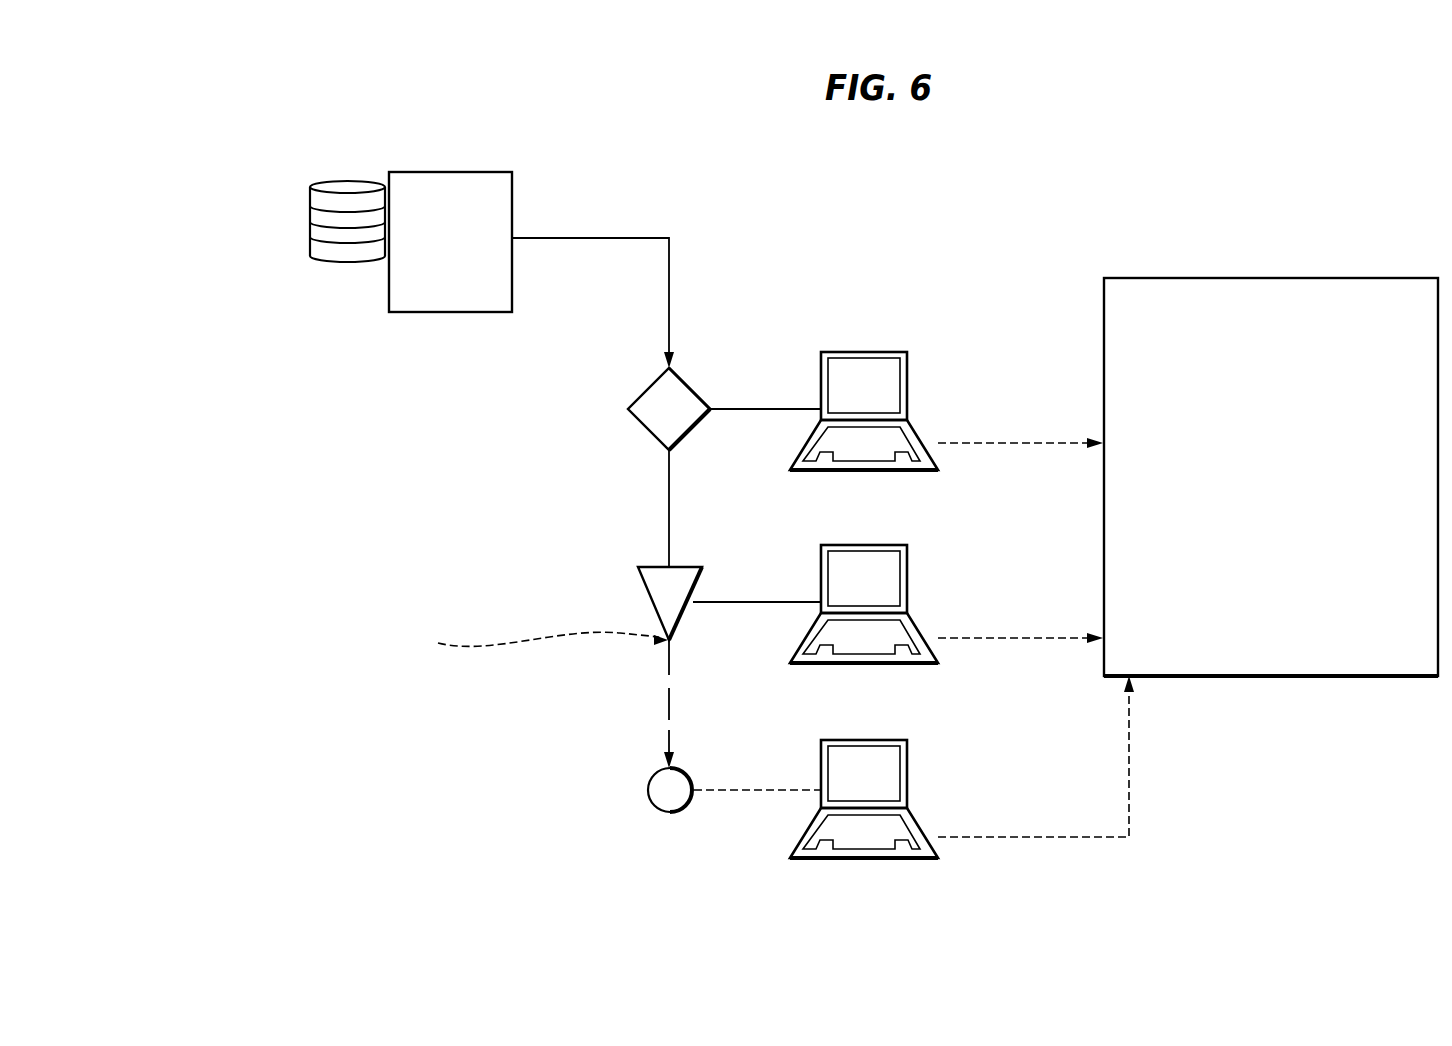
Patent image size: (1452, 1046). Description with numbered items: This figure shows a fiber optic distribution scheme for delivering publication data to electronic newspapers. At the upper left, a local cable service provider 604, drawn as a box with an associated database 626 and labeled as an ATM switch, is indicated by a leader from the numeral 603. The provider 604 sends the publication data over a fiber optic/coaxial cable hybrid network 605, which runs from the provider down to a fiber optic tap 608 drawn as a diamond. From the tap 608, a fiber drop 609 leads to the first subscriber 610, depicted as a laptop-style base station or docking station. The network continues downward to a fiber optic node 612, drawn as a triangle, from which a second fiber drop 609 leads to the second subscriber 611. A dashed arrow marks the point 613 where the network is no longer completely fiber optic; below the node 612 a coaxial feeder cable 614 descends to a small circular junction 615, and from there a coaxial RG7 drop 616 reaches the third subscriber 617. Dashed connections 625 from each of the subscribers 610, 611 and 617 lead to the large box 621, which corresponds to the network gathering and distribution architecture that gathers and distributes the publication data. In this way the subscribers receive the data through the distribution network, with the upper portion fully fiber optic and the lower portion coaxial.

The ATM switch system 603 is at (452, 163).
The local cable service provider 604 is at (471, 252).
The fiber optic/coaxial cable hybrid network 605 is at (588, 240).
The fiber optic tap 608 is at (636, 401).
The fiber drops 609 is at (763, 406).
The subscriber 610 is at (908, 364).
The subscriber 611 is at (908, 557).
The fiber optic node 612 is at (647, 592).
The point where the network is no longer completely fiber optic 613 is at (530, 639).
The coaxial feeder cable 614 is at (668, 702).
The connection point 615 is at (652, 805).
The coaxial RG7 drop 616 is at (776, 790).
The subscriber 617 is at (908, 760).
The network gathering and distribution architecture 621 is at (1292, 487).
The connections to network 625 is at (1005, 440).
The database 626 is at (310, 202).